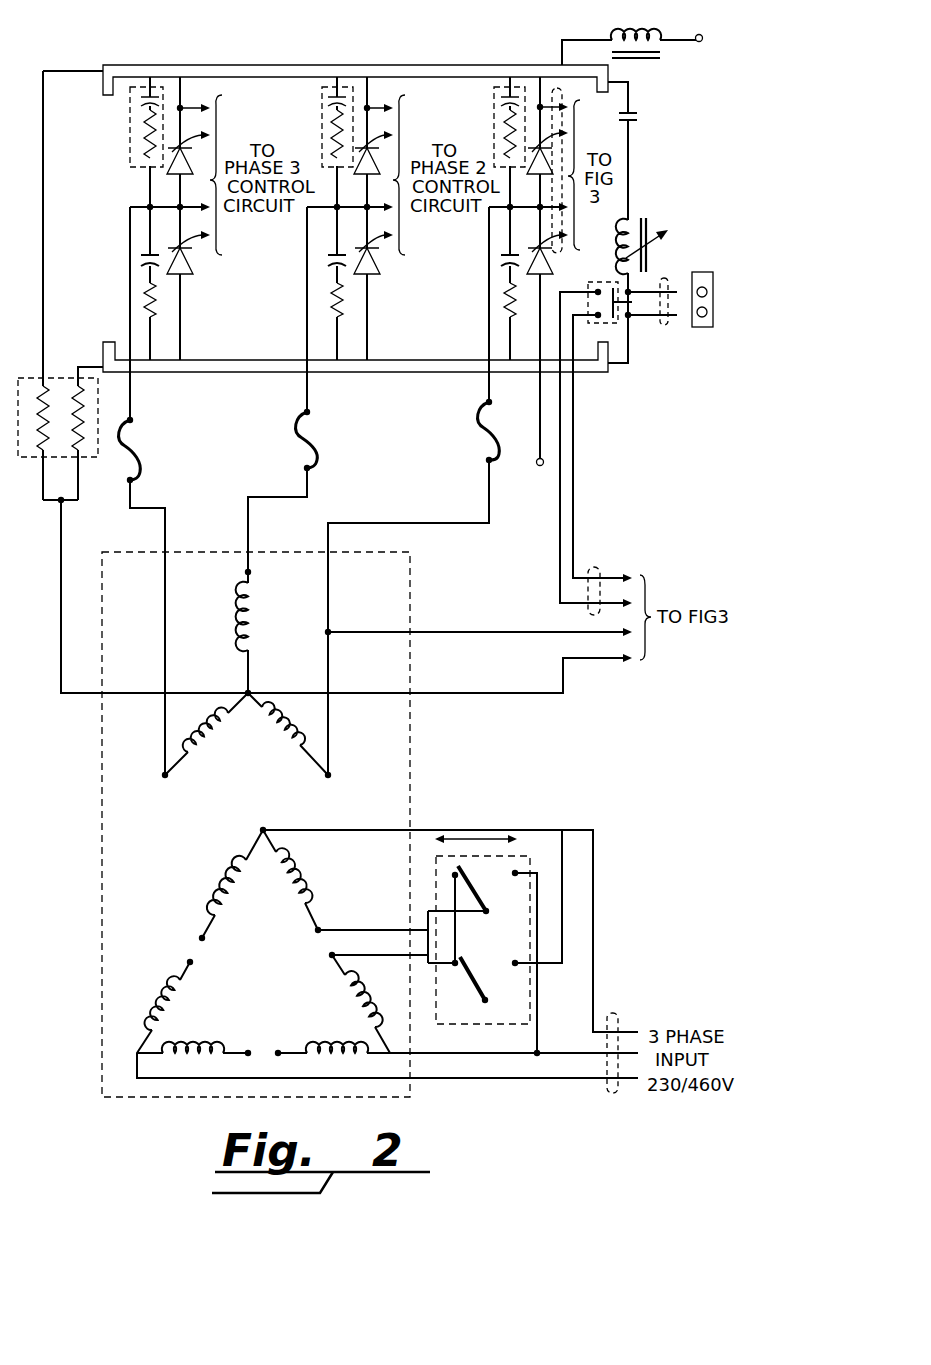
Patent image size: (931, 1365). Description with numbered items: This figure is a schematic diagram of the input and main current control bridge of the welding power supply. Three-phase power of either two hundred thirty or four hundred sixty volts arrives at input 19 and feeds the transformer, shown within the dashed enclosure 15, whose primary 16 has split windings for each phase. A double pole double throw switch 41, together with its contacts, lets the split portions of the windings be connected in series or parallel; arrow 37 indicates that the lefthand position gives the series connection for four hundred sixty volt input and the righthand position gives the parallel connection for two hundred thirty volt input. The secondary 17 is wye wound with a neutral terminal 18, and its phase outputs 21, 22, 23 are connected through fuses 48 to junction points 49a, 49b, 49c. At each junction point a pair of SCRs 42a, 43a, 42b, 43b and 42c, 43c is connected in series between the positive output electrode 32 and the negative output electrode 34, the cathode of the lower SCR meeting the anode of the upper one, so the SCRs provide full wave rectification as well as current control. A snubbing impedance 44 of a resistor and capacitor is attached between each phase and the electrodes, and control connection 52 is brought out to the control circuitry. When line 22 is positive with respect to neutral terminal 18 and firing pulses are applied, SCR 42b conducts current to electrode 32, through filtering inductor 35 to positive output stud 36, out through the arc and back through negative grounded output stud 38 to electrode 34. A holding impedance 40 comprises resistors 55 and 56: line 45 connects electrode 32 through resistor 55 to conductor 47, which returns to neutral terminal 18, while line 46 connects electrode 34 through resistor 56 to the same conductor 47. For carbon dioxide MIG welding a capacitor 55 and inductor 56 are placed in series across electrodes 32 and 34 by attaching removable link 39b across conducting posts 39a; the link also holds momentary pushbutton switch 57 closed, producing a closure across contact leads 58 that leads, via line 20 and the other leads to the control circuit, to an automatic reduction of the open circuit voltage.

The transformer (dashed enclosure) 15 is at (102, 775).
The primary 16 is at (186, 886).
The secondary 17 is at (220, 786).
The neutral terminal 18 is at (251, 692).
The input 19 is at (615, 1015).
The output line to FIG 3 20 is at (515, 693).
The phase output 21 is at (243, 565).
The phase output line 22 is at (515, 631).
The phase output 23 is at (163, 600).
The positive output electrode 32 is at (440, 65).
The negative output electrode 34 is at (432, 377).
The filtering inductor 35 is at (630, 36).
The positive output stud 36 is at (698, 33).
The arrow 37 is at (477, 845).
The negative grounded output stud 38 is at (540, 466).
The conducting posts 39a is at (666, 278).
The removable link 39b is at (702, 327).
The holding impedance 40 is at (17, 447).
The double pole double throw switch 41 is at (490, 1026).
The SCR 42a is at (370, 168).
The SCR 42b is at (543, 168).
The SCR 42c is at (183, 168).
The SCR 43a is at (382, 268).
The SCR 43b is at (552, 266).
The SCR 43c is at (195, 268).
The snubbing impedance 44 is at (130, 140).
The line 45 is at (43, 222).
The line 46 is at (87, 364).
The conductor 47 is at (61, 581).
The fuses 48 is at (138, 448).
The junction point 49a is at (370, 208).
The junction point 49b is at (542, 208).
The junction point 49c is at (182, 208).
The control connection 52 is at (555, 90).
The resistor / capacitor 55 is at (638, 110).
The resistor / inductor 56 is at (652, 226).
The momentary pushbutton switch 57 is at (612, 324).
The contact leads 58 is at (598, 567).